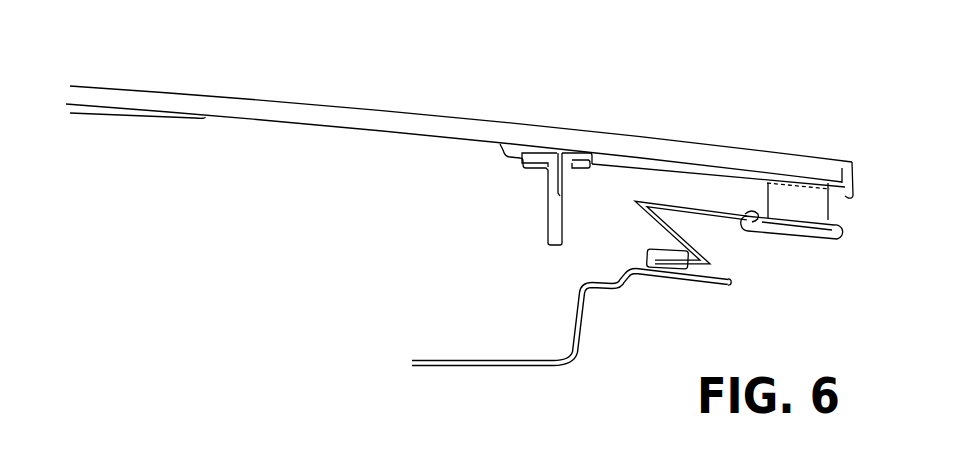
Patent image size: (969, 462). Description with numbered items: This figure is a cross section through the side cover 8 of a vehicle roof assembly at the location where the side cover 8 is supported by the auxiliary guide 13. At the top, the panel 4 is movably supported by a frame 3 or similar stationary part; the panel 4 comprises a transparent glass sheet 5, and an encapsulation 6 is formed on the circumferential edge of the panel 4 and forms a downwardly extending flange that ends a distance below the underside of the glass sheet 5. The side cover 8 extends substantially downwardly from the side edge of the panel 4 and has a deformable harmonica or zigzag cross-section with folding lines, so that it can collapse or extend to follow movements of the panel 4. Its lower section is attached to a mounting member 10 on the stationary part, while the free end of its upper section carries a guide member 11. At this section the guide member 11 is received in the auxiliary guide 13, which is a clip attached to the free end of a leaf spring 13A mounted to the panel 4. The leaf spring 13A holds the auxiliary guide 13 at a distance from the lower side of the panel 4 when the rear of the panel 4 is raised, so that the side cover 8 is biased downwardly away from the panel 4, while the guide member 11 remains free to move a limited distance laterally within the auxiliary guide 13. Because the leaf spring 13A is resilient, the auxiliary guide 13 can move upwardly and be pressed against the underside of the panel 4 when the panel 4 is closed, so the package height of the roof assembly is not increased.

The frame 3 is at (577, 352).
The panel 4 is at (547, 103).
The transparent glass sheet 5 is at (408, 122).
The encapsulation 6 is at (852, 162).
The side cover 8 is at (676, 202).
The mounting member 10 is at (692, 268).
The guide member 11 is at (753, 217).
The auxiliary guide 13 is at (833, 242).
The leaf spring 13A is at (797, 198).